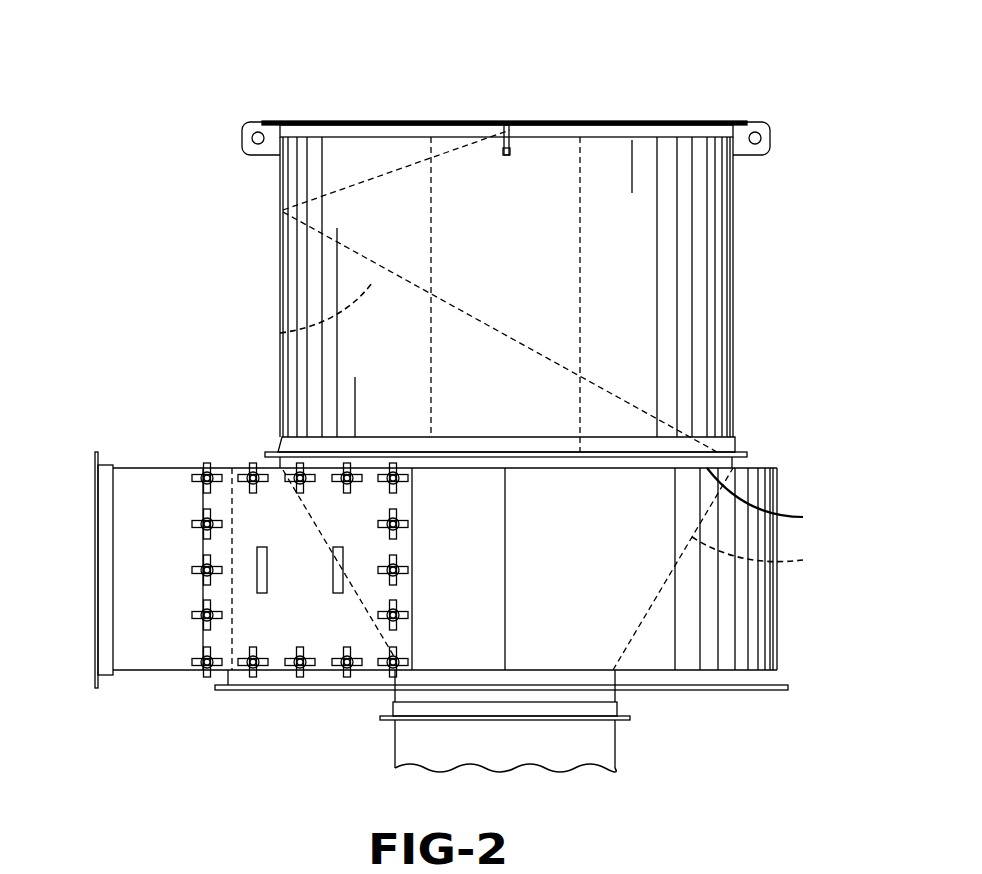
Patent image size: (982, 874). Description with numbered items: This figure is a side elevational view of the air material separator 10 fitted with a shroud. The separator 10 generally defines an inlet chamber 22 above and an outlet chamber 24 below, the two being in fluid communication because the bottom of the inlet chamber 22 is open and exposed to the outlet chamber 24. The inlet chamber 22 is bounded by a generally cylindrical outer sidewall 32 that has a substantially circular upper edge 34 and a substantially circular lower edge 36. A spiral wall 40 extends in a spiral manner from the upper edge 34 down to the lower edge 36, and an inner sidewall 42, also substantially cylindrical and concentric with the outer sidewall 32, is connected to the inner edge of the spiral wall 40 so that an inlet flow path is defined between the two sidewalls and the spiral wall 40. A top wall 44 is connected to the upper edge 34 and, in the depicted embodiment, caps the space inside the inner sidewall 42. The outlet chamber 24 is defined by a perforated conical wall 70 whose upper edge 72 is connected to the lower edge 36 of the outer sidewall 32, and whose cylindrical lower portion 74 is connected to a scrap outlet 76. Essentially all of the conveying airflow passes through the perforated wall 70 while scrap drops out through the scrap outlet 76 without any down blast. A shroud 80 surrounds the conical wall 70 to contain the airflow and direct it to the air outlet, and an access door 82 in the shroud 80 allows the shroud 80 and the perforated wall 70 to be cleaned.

The air material separator 10 is at (203, 80).
The inlet chamber 22 is at (280, 240).
The outlet chamber 24 is at (168, 466).
The outer sidewall 32 is at (328, 285).
The upper edge 34 is at (336, 126).
The lower edge 36 is at (320, 452).
The spiral wall 40 is at (280, 333).
The inner sidewall 42 is at (431, 168).
The top wall 44 is at (673, 122).
The perforated conical wall 70 is at (764, 554).
The upper edge 72 is at (772, 499).
The cylindrical lower portion 74 is at (608, 695).
The scrap outlet 76 is at (600, 750).
The shroud 80 is at (742, 638).
The access door 82 is at (285, 630).